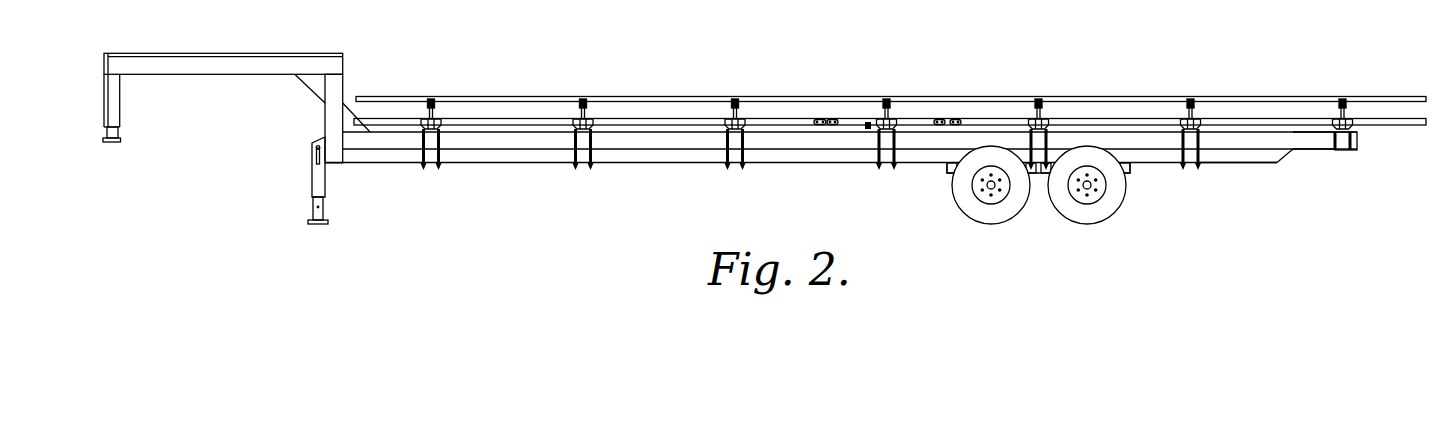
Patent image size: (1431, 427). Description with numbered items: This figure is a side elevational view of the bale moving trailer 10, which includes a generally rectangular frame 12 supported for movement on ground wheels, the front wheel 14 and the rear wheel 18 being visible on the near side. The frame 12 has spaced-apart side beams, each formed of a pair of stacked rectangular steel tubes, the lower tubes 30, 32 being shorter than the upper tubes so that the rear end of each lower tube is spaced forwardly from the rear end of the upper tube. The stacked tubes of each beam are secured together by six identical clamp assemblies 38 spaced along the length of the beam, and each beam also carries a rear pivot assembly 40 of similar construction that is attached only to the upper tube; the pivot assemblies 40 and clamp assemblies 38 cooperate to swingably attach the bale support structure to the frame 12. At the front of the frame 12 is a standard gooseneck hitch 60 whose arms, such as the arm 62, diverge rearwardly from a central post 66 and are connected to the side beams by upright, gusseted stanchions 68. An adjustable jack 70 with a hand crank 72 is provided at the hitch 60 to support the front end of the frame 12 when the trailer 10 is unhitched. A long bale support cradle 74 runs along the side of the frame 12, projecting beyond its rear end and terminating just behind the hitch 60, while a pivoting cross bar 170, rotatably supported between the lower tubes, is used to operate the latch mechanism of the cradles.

The bale moving trailer 10 is at (1374, 90).
The frame 12 is at (1293, 150).
The front wheel 14 is at (973, 213).
The rear wheel 18 is at (1103, 213).
The lower tube 30 is at (1317, 143).
The lower tube 32 is at (1258, 163).
The clamp assembly 38 is at (439, 167).
The rear pivot assembly 40 is at (1353, 150).
The gooseneck hitch 60 is at (282, 75).
The arm 62 is at (190, 58).
The central post 66 is at (113, 100).
The stanchion 68 is at (337, 83).
The adjustable jack 70 is at (312, 190).
The hand crank 72 is at (312, 160).
The bale support cradle 74 is at (617, 92).
The pivoting cross bar 170 is at (517, 162).